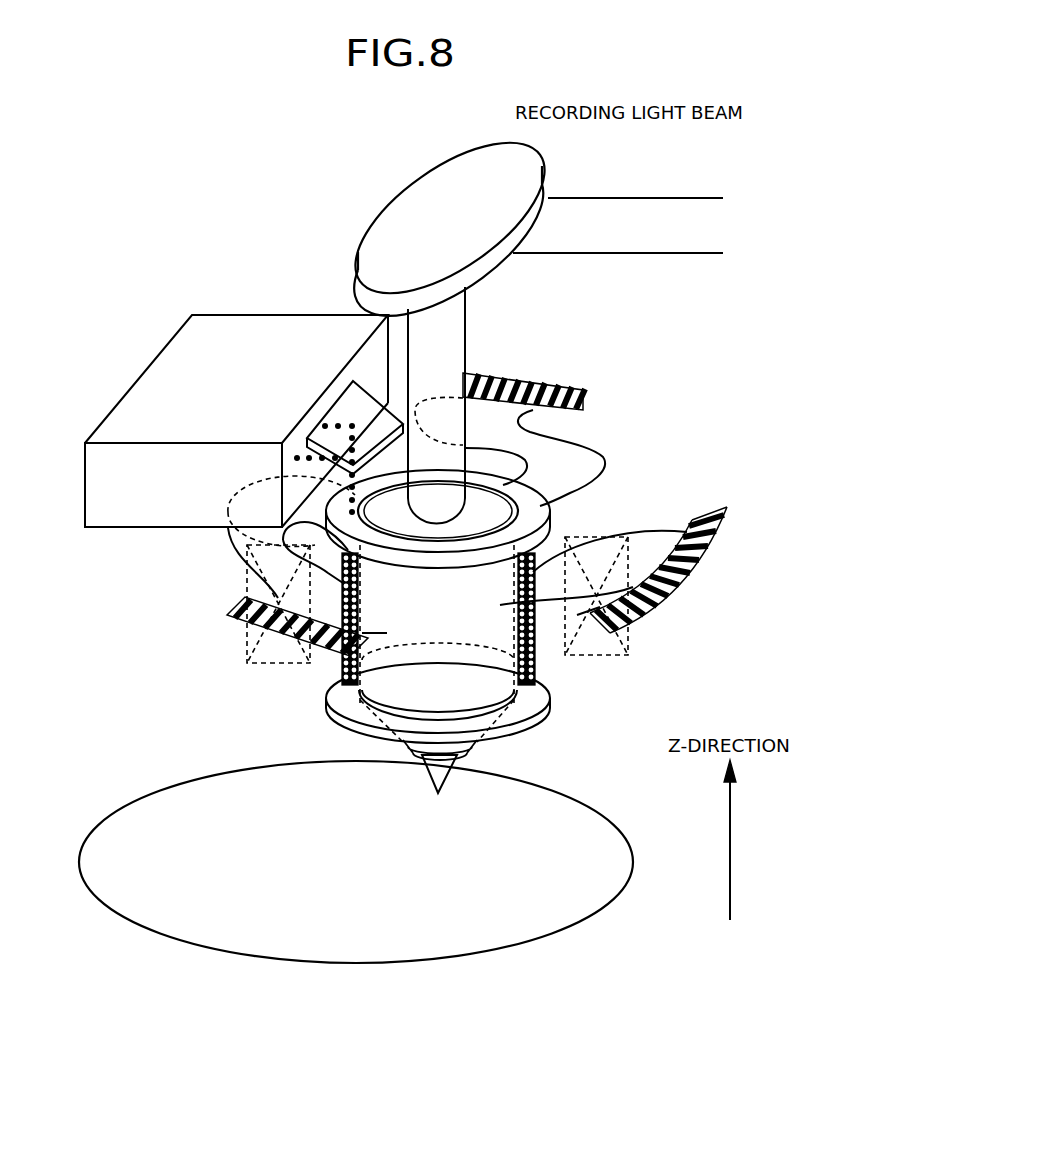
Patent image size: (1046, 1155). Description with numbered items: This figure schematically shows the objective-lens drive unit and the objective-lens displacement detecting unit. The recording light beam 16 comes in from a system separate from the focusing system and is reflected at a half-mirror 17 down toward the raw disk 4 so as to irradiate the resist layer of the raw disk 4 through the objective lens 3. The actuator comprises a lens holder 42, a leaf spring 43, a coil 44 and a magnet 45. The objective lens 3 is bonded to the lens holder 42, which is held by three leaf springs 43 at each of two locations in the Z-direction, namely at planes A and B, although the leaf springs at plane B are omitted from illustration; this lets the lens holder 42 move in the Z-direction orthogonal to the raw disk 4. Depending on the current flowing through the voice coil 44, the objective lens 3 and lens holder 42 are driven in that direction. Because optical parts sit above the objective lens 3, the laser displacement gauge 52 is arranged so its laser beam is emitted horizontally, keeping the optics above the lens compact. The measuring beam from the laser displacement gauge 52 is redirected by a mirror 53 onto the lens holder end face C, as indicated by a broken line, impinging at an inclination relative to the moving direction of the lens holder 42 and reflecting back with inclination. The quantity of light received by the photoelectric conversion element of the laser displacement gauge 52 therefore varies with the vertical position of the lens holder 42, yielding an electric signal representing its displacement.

The objective lens 3 is at (549, 514).
The raw disk 4 is at (160, 803).
The recording light beam 16 is at (627, 207).
The half-mirror 17 is at (420, 186).
The lens holder 42 is at (445, 648).
The leaf spring 43 is at (600, 455).
The coil 44 is at (340, 665).
The magnet 45 is at (600, 530).
The laser displacement gauge 52 is at (230, 322).
The mirror 53 is at (346, 397).
The plane A is at (538, 487).
The plane B is at (548, 690).
The lens holder end face C is at (348, 512).